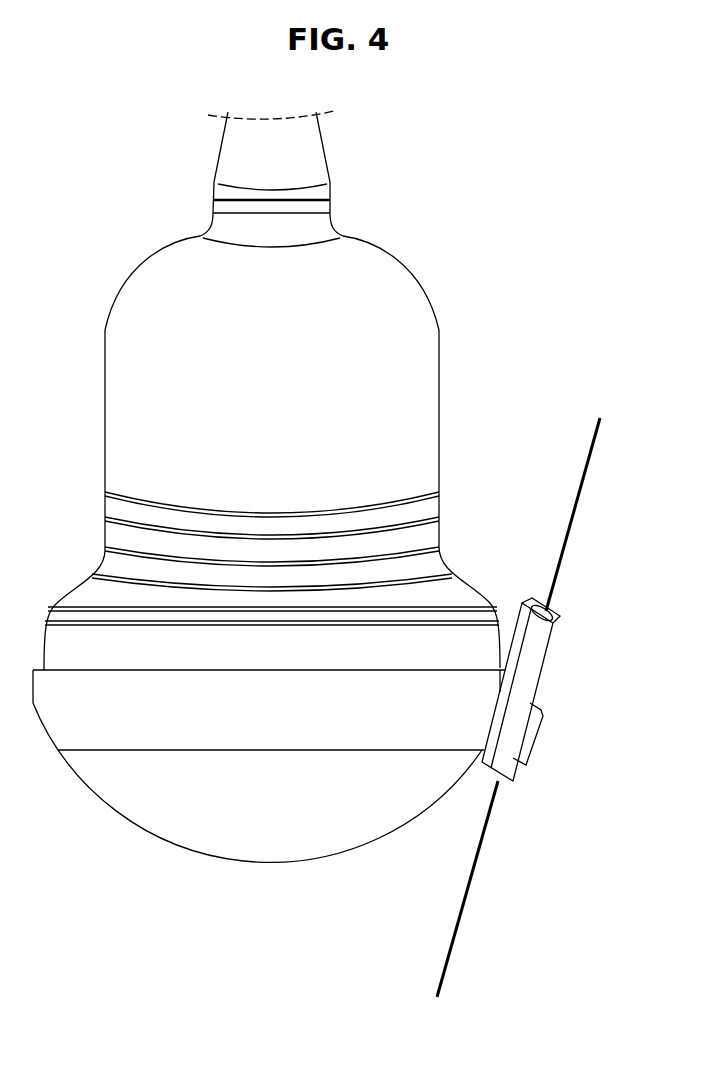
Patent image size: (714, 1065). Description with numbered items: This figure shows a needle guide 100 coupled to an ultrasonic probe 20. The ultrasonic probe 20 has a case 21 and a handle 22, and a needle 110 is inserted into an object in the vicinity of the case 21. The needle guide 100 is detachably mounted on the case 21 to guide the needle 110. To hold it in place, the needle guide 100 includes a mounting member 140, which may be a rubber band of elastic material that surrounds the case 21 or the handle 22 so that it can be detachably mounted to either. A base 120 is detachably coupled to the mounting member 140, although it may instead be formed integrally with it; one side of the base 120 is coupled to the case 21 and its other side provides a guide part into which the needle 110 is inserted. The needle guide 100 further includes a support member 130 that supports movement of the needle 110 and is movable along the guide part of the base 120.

The ultrasonic probe 20 is at (268, 489).
The case 21 is at (97, 797).
The handle 22 is at (125, 403).
The mounting member 140 is at (170, 740).
The needle guide 100 is at (549, 707).
The needle 110 is at (477, 866).
The base 120 is at (540, 668).
The support member 130 is at (547, 745).